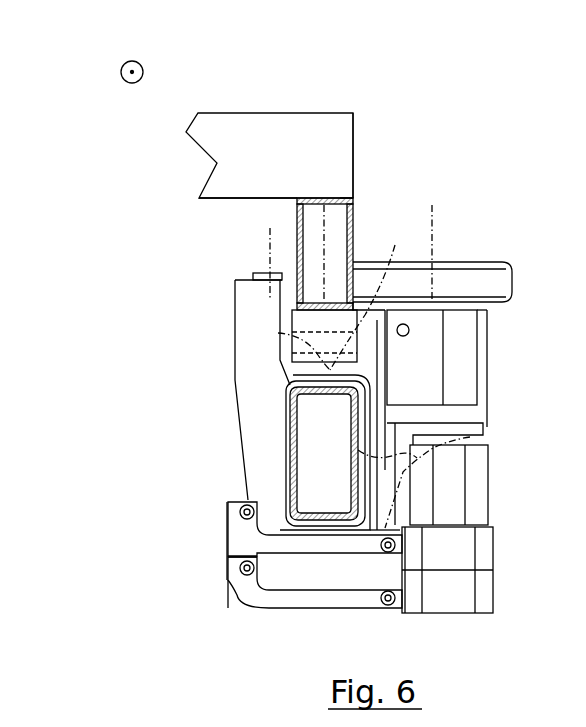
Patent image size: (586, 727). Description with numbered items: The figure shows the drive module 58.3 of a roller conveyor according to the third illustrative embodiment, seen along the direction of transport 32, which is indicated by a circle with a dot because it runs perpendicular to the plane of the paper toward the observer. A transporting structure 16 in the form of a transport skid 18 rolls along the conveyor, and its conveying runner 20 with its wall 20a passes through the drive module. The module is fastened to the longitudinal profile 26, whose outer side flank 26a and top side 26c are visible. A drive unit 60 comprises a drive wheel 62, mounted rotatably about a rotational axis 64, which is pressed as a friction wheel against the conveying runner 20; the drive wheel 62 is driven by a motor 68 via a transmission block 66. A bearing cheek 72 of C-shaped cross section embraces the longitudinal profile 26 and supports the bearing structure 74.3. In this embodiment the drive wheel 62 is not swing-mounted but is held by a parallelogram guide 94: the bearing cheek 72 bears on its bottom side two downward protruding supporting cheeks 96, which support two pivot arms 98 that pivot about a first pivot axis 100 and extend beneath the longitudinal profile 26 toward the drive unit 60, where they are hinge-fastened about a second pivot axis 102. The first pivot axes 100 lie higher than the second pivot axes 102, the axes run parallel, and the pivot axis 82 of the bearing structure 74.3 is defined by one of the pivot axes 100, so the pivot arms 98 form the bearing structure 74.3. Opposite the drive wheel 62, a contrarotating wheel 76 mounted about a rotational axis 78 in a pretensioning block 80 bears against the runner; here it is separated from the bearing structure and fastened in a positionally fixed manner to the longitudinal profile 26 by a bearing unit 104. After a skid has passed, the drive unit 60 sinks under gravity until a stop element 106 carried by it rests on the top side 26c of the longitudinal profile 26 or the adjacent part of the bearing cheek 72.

The transporting structure 16 is at (243, 108).
The transport skid 18 is at (325, 112).
The conveying runner 20 is at (268, 200).
The housing wall 20a is at (355, 198).
The longitudinal profile 26 is at (305, 442).
The outer side flank 26a is at (470, 437).
The top side 26c is at (367, 289).
The direction of transport 32 is at (120, 70).
The drive module 58.3 is at (470, 98).
The drive unit 60 is at (522, 560).
The drive wheel 62 is at (493, 287).
The rotational axis 64 is at (435, 212).
The transmission block 66 is at (460, 353).
The motor 68 is at (477, 470).
The bearing cheek 72 is at (293, 413).
The bearing structure 74.3 is at (215, 598).
The contrarotating wheel 76 is at (262, 270).
The rotational axis 78 is at (268, 232).
The pretensioning block 80 is at (257, 295).
The pivot axis 82 is at (248, 505).
The parallelogram guide 94 is at (230, 618).
The supporting cheek 96 is at (232, 538).
The pivot arm 98 is at (288, 540).
The first pivot axis 100 is at (240, 507).
The second pivot axis 102 is at (398, 541).
The bearing unit 104 is at (255, 378).
The stop element 106 is at (280, 335).